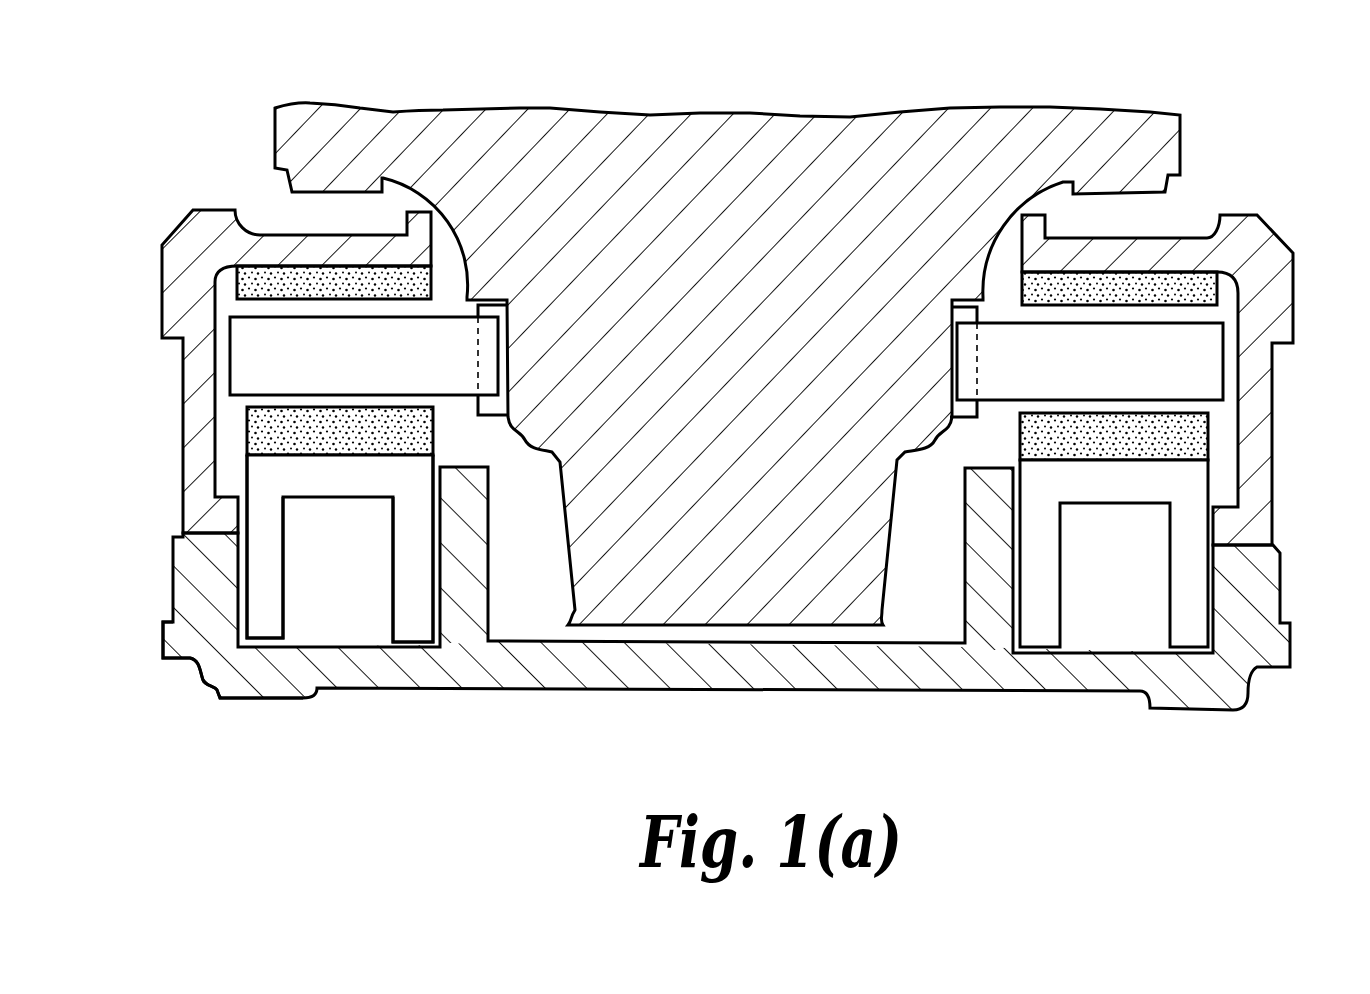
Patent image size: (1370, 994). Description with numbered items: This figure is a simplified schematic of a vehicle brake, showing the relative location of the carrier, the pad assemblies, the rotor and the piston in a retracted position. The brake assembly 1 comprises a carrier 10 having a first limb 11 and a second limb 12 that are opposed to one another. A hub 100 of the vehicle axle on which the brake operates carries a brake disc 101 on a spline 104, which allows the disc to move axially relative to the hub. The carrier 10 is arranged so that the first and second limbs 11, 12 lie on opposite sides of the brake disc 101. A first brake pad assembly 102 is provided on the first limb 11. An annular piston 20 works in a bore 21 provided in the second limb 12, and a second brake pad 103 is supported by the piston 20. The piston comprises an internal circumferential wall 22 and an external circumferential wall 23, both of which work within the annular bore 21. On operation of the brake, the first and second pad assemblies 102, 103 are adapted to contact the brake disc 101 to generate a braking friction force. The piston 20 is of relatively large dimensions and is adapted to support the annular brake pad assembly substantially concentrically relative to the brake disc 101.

The brake assembly 1 is at (628, 703).
The carrier 10 is at (863, 692).
The first limb 11 is at (211, 207).
The second limb 12 is at (193, 672).
The annular piston 20 is at (1058, 613).
The bore 21 is at (427, 617).
The internal circumferential wall 22 is at (388, 610).
The external circumferential wall 23 is at (290, 618).
The hub 100 is at (893, 113).
The brake disc 101 is at (1223, 362).
The first brake pad assembly 102 is at (1172, 277).
The second brake pad 103 is at (1192, 440).
The spline 104 is at (497, 420).